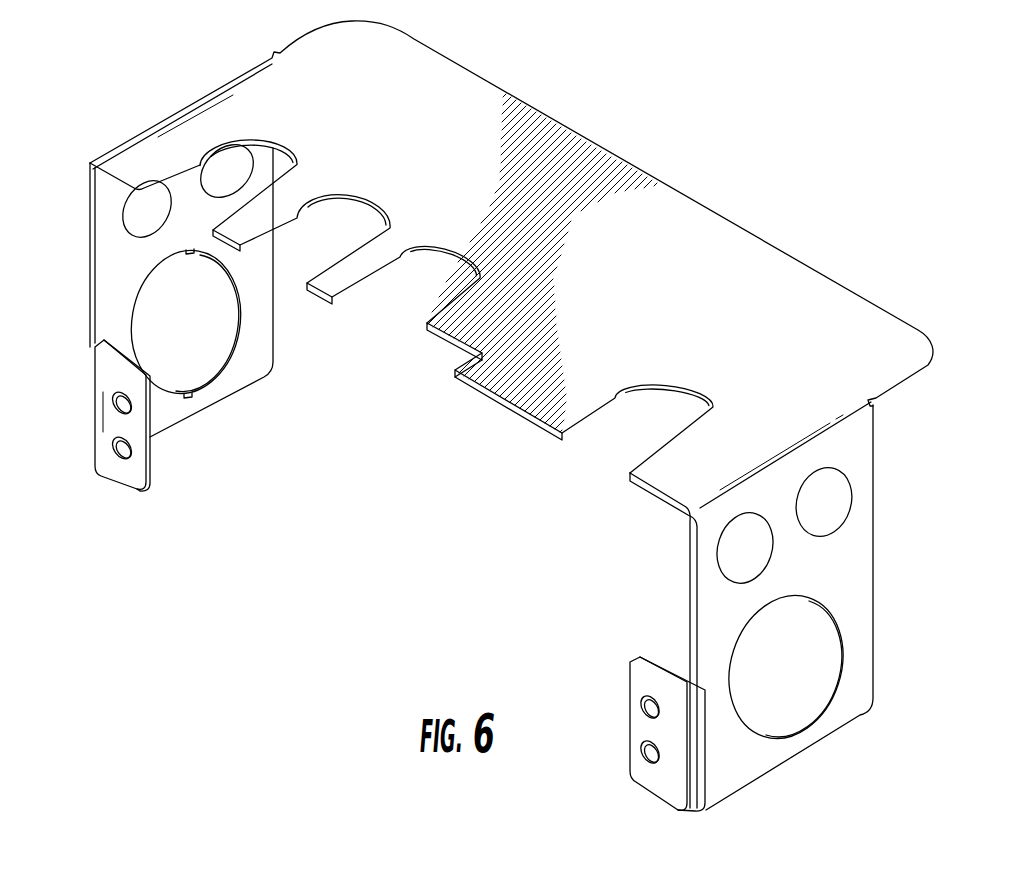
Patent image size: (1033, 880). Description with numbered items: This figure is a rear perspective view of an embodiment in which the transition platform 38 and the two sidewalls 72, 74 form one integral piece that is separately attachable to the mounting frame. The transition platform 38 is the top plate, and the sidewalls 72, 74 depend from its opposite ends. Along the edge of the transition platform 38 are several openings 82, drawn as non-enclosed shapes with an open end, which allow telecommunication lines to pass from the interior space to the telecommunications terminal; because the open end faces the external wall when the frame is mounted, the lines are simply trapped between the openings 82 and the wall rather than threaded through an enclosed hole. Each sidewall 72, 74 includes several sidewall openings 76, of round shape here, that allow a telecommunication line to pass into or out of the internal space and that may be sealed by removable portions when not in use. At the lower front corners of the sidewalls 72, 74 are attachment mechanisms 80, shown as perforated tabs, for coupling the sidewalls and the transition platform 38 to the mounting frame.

The transition platform 38 is at (705, 206).
The sidewall 72 is at (874, 620).
The sidewall 74 is at (245, 387).
The sidewall opening 76 is at (247, 172).
The attachment mechanism 80 is at (150, 466).
The opening 82 is at (190, 172).